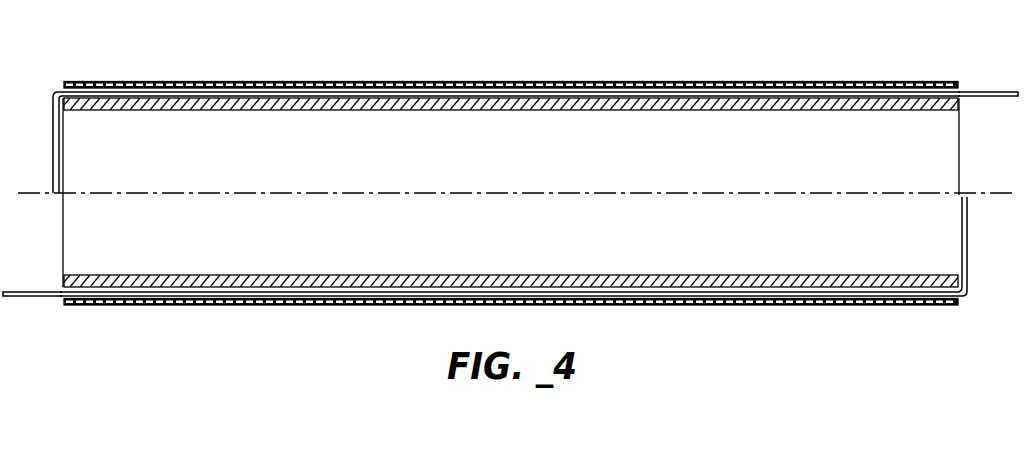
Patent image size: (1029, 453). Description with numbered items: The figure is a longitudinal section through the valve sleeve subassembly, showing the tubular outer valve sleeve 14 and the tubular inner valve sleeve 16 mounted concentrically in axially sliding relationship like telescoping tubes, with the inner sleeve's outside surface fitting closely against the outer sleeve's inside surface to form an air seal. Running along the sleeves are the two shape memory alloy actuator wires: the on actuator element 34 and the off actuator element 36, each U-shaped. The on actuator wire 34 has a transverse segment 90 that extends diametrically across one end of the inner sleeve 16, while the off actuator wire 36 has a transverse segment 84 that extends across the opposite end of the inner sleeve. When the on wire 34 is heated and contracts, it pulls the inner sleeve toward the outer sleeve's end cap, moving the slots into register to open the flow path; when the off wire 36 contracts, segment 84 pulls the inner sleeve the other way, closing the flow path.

The tubular outer valve sleeve 14 is at (664, 82).
The tubular inner valve sleeve 16 is at (697, 111).
The transverse segment of the on actuator wire 90 is at (54, 133).
The transverse segment of the off actuator wire 84 is at (970, 243).
The on actuator element 34 is at (986, 91).
The off actuator element 36 is at (30, 297).